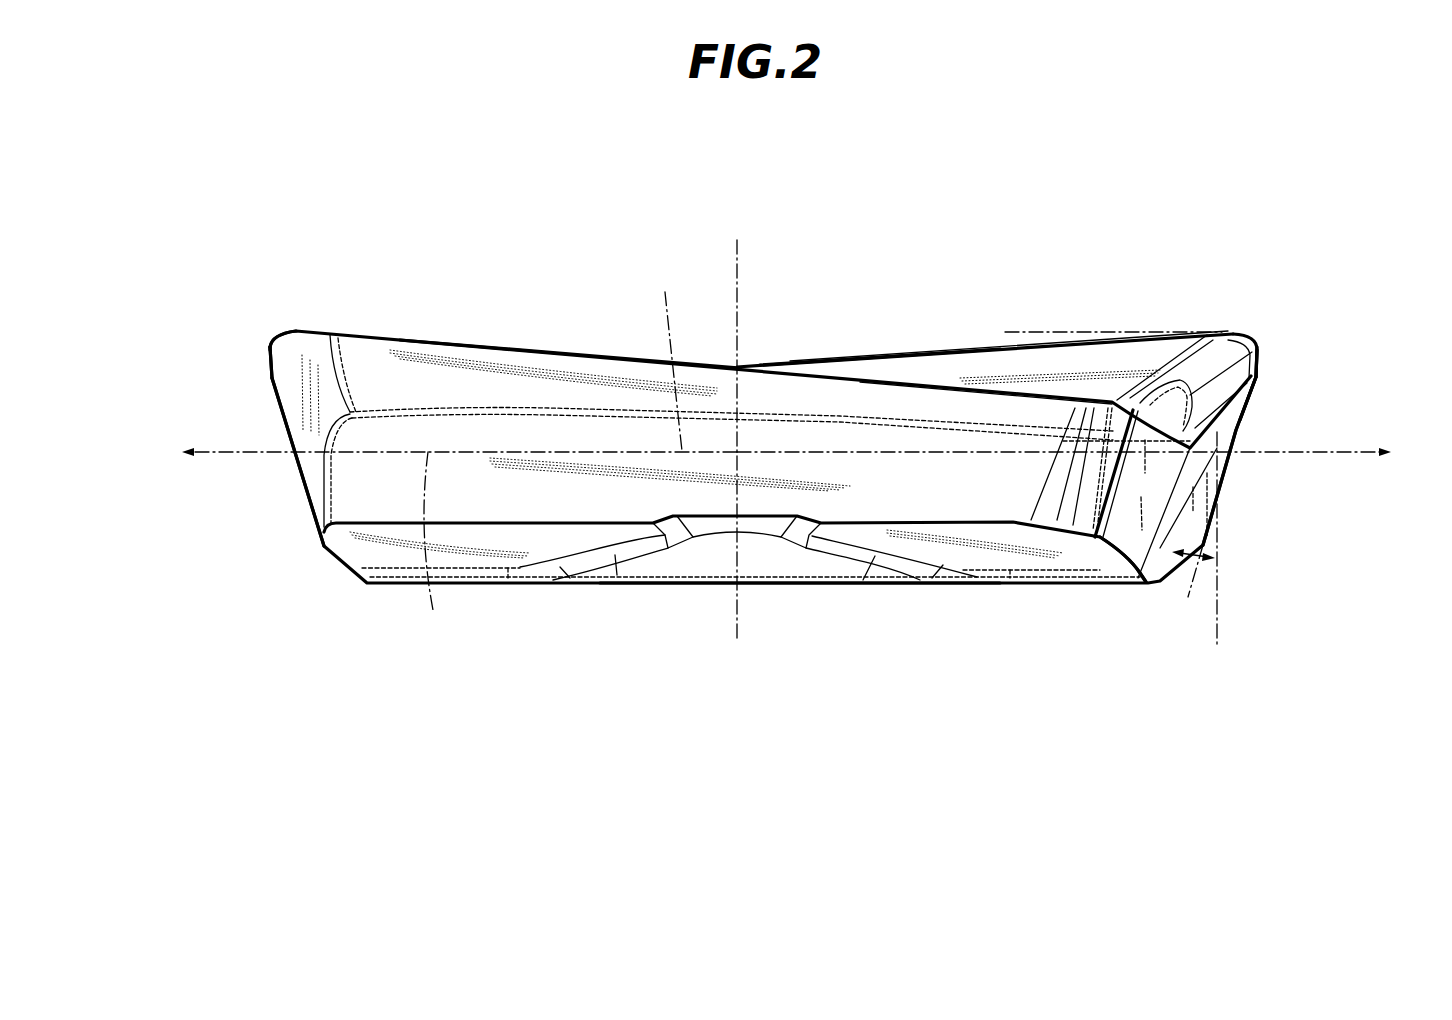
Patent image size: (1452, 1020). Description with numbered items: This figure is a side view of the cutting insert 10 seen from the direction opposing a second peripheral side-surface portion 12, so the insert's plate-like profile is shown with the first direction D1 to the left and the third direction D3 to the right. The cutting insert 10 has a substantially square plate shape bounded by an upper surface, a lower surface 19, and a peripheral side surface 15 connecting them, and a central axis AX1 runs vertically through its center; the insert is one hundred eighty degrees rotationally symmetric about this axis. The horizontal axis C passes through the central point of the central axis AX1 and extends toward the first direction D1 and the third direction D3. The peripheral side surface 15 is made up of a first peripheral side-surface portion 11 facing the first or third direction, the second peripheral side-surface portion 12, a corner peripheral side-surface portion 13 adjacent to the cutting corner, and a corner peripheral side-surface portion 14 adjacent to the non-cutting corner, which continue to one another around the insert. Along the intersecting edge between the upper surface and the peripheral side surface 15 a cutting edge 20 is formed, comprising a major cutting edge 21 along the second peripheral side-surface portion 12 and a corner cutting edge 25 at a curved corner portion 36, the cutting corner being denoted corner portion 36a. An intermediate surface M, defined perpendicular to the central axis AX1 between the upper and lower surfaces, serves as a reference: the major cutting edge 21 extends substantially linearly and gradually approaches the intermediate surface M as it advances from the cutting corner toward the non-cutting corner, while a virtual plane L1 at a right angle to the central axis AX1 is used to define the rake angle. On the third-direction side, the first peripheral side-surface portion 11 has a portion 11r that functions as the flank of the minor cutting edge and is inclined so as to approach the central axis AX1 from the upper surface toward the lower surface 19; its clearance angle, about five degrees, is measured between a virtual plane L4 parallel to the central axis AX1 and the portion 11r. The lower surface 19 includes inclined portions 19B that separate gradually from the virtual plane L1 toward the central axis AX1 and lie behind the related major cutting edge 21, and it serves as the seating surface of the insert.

The cutting insert 10 is at (298, 206).
The first peripheral side-surface portion 11 is at (1148, 562).
The portion functioning as a flank 11r is at (1244, 470).
The second peripheral side-surface portion 12 is at (620, 498).
The corner peripheral side-surface portion 13 is at (302, 400).
The corner peripheral side-surface portion 14 is at (1122, 508).
The peripheral side surface 15 is at (271, 506).
The lower surface 19 is at (835, 596).
The inclined portion 19B is at (968, 551).
The cutting edge 20 is at (262, 367).
The major cutting edge 21 is at (576, 351).
The corner cutting edge 25 is at (273, 347).
The corner portion 36 is at (292, 332).
The corner portion relating to the cutting 36a is at (1235, 332).
The axis C is at (430, 551).
The intermediate surface M is at (668, 355).
The central axis AX1 is at (738, 297).
The virtual plane L1 is at (1056, 330).
The virtual plane L4 is at (1218, 604).
The first direction D1 is at (433, 452).
The third direction D3 is at (1088, 452).